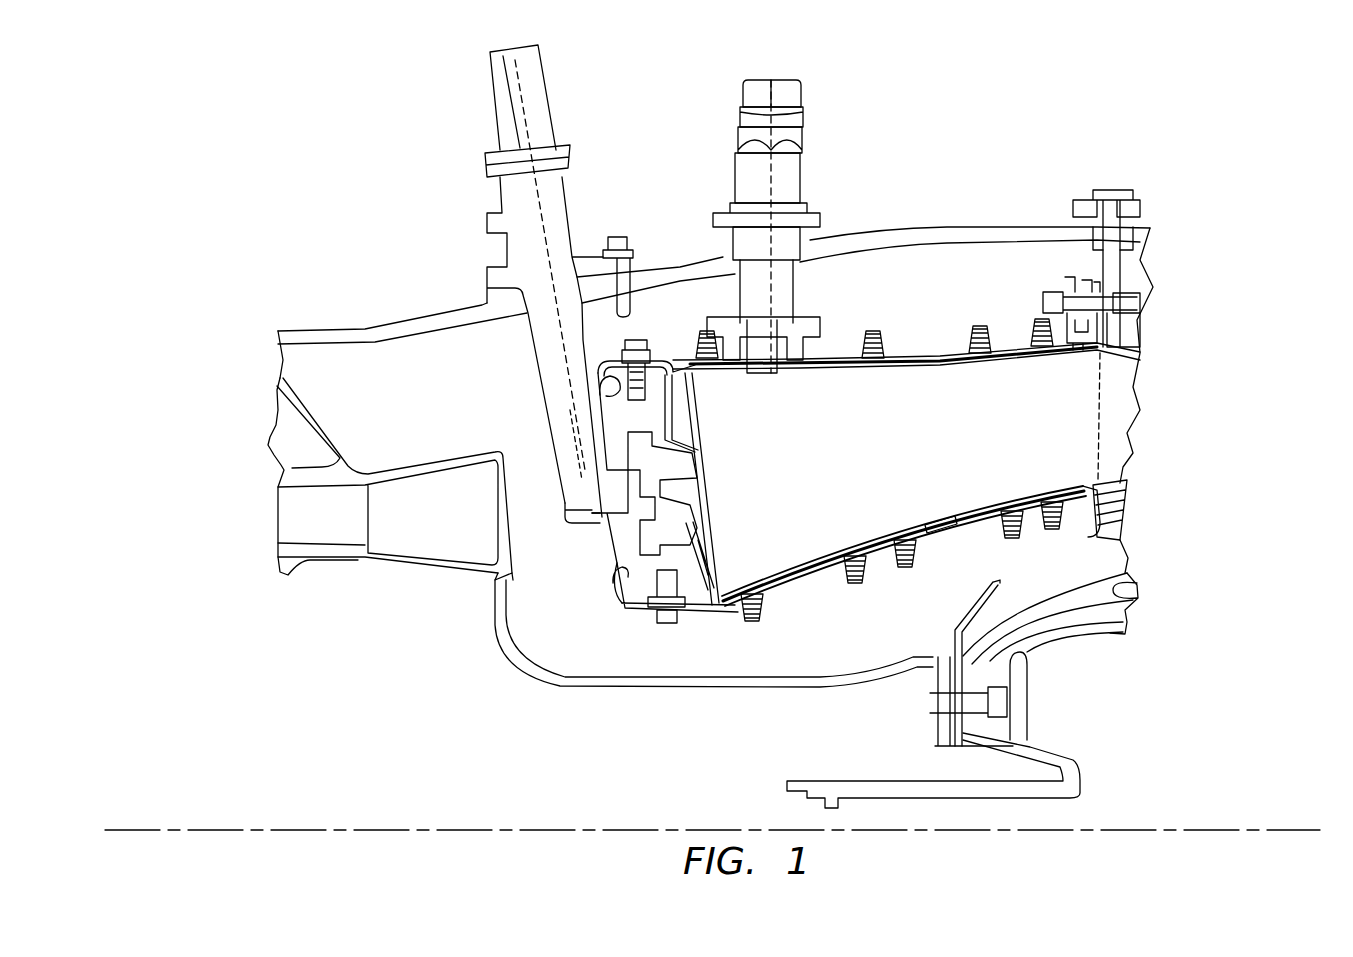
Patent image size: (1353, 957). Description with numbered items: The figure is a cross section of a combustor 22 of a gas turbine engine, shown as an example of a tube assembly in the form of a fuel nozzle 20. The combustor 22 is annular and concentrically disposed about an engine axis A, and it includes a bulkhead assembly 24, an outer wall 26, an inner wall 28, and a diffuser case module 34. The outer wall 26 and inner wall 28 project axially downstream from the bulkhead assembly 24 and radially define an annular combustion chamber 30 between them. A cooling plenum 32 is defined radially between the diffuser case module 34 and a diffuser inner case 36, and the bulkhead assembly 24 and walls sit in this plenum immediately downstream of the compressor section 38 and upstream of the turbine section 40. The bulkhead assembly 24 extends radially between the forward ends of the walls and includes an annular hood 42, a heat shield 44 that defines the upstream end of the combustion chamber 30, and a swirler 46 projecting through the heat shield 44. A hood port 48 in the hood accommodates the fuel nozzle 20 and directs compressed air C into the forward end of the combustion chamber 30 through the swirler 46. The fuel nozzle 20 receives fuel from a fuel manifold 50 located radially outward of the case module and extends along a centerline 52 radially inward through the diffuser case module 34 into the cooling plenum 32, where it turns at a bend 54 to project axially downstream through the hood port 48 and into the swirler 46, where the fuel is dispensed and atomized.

The fuel nozzle 20 is at (531, 393).
The combustor 22 is at (1029, 130).
The bulkhead assembly 24 is at (597, 583).
The outer wall 26 is at (903, 356).
The inner wall 28 is at (942, 530).
The combustion chamber 30 is at (895, 465).
The cooling plenum 32 is at (502, 373).
The diffuser case module 34 is at (1011, 228).
The diffuser inner case 36 is at (786, 688).
The compressor section 38 is at (468, 510).
The turbine section 40 is at (1120, 405).
The hood 42 is at (612, 603).
The heat shield 44 is at (712, 550).
The swirler 46 is at (660, 488).
The hood port 48 is at (590, 540).
The fuel manifold 50 is at (549, 93).
The centerline 52 is at (487, 90).
The bend 54 is at (565, 503).
The engine axis A is at (1295, 830).
The compressed air C is at (444, 513).